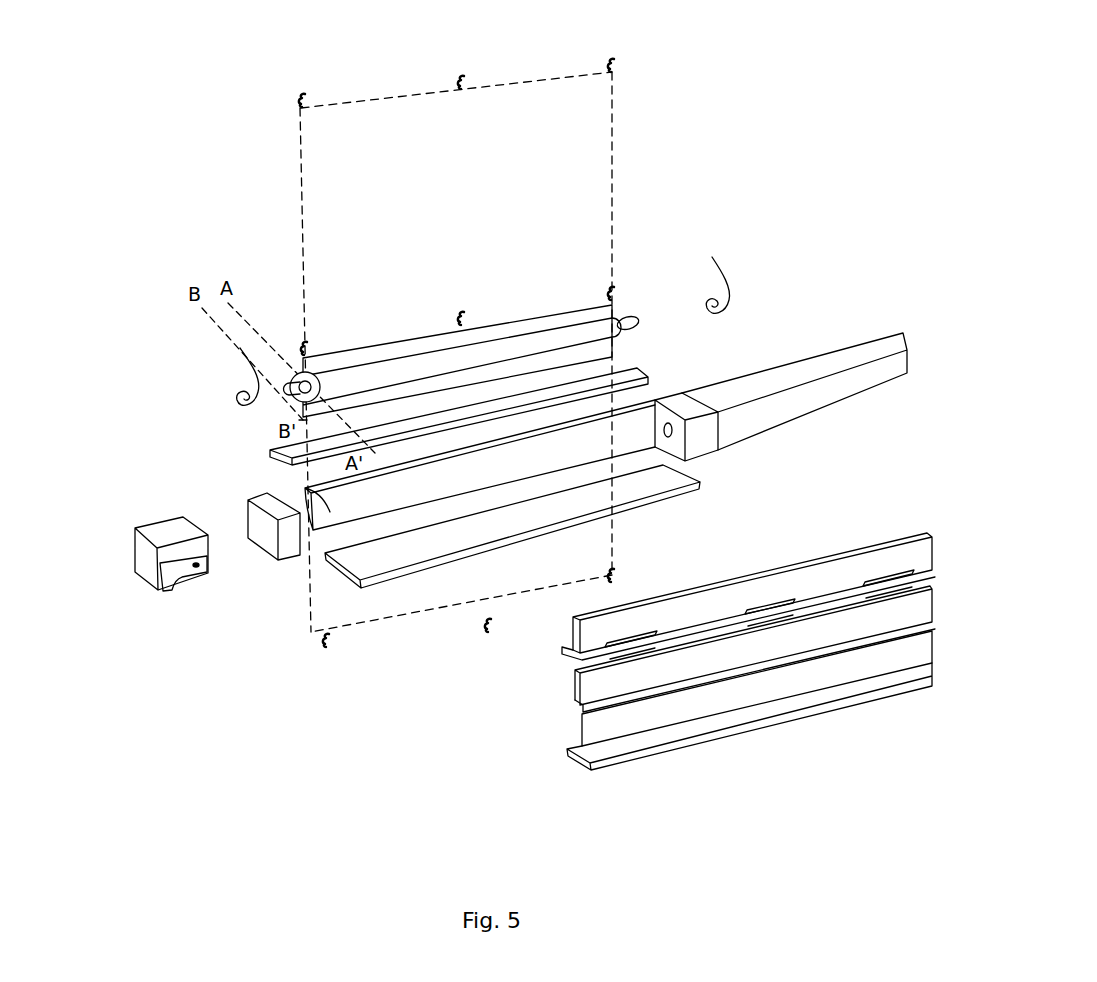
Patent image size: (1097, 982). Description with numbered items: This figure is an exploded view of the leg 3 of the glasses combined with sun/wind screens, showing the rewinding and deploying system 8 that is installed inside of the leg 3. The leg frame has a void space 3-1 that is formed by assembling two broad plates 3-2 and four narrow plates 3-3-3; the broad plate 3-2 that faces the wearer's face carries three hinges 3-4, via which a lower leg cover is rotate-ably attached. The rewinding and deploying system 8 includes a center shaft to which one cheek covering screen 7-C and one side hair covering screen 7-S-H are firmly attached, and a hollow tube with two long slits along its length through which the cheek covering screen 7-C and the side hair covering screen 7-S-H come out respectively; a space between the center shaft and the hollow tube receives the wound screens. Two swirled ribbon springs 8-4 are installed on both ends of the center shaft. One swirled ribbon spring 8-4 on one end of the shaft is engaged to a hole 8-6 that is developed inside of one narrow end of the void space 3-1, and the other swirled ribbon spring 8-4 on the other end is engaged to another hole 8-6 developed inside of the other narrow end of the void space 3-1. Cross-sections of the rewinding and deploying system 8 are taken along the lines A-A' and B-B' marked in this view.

The leg 3 is at (828, 267).
The void space 3-1 is at (305, 488).
The broad plate 3-2 is at (763, 642).
The narrow plate 3-3-3 is at (567, 750).
The hinge 3-4 is at (627, 645).
The cheek covering screen 7-C is at (320, 587).
The side hair covering screen 7-S-H is at (597, 123).
The rewinding and deploying system 8 is at (553, 330).
The swirled ribbon spring 8-4 is at (240, 348).
The hole 8-6 is at (723, 390).